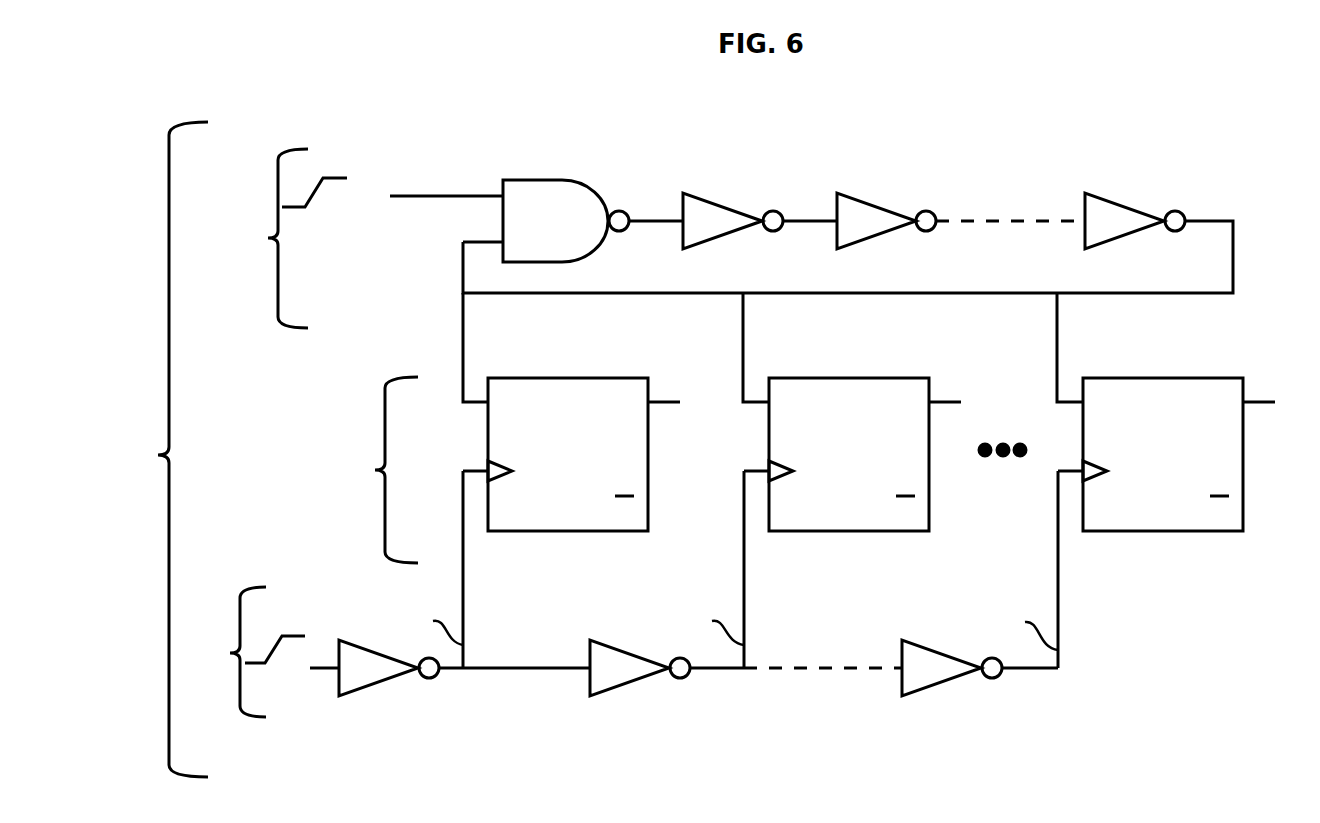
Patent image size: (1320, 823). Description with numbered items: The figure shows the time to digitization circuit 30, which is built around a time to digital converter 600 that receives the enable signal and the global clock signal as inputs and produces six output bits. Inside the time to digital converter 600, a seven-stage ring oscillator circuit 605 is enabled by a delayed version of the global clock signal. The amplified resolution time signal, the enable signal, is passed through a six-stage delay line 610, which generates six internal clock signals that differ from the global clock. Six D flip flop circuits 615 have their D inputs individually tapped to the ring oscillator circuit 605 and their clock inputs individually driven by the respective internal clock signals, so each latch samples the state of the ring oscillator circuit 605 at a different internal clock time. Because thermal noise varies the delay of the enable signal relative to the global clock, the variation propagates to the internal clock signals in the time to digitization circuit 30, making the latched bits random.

The time to digitization circuit 30 is at (630, 108).
The time to digital converter 600 is at (158, 455).
The 7-stage ring oscillator circuit 605 is at (268, 238).
The 6-stage delay line 610 is at (230, 653).
The D flip flop circuits 615 is at (375, 470).